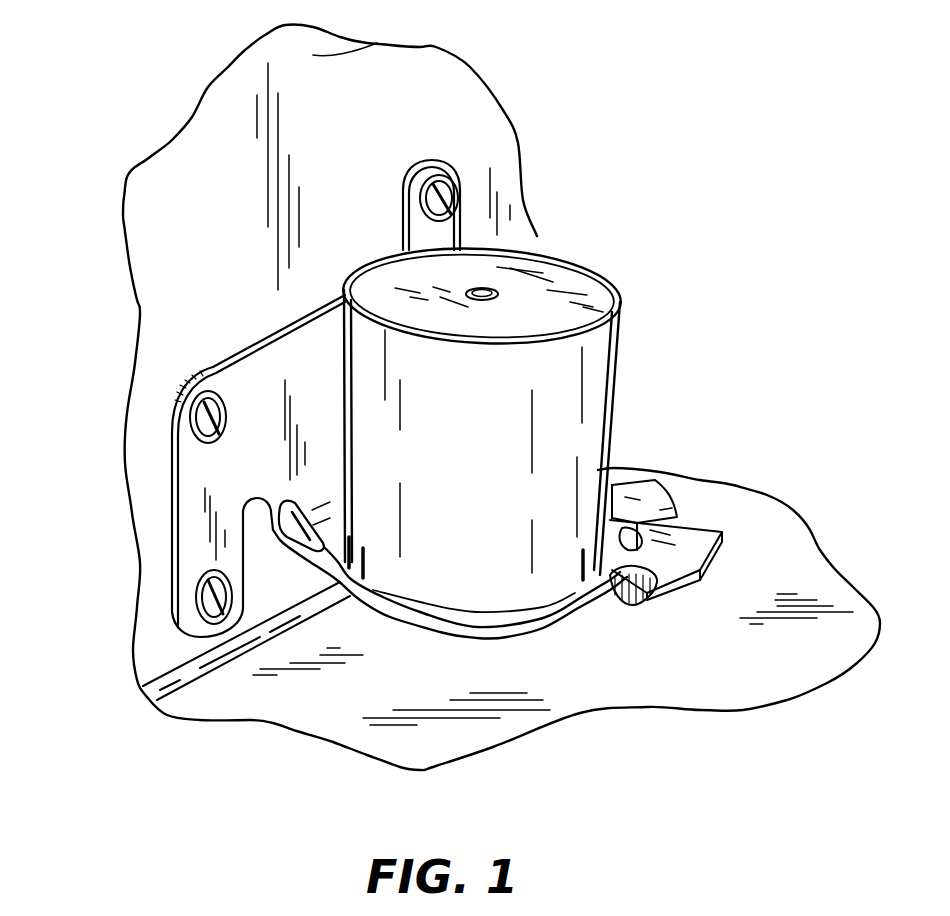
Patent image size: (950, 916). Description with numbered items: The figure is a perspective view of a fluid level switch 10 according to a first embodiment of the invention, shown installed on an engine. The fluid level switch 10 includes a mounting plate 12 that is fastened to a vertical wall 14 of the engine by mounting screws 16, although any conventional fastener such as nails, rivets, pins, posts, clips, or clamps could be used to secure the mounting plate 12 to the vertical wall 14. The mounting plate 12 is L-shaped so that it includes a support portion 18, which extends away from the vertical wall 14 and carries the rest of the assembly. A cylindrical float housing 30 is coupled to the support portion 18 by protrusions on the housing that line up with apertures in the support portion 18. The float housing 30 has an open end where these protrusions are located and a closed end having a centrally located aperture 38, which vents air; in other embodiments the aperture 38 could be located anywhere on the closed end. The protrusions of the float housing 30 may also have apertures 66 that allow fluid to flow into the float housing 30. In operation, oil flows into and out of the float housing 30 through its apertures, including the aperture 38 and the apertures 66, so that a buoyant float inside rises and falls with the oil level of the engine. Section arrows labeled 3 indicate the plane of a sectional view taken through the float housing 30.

The fluid level switch 10 is at (639, 135).
The mounting plate 12 is at (237, 455).
The vertical wall 14 is at (378, 44).
The mounting screws 16 is at (442, 187).
The support portion 18 is at (533, 628).
The cylindrical float housing 30 is at (587, 437).
The aperture 38 is at (480, 288).
The apertures 66 is at (316, 607).
The section line 3- 3 is at (603, 231).